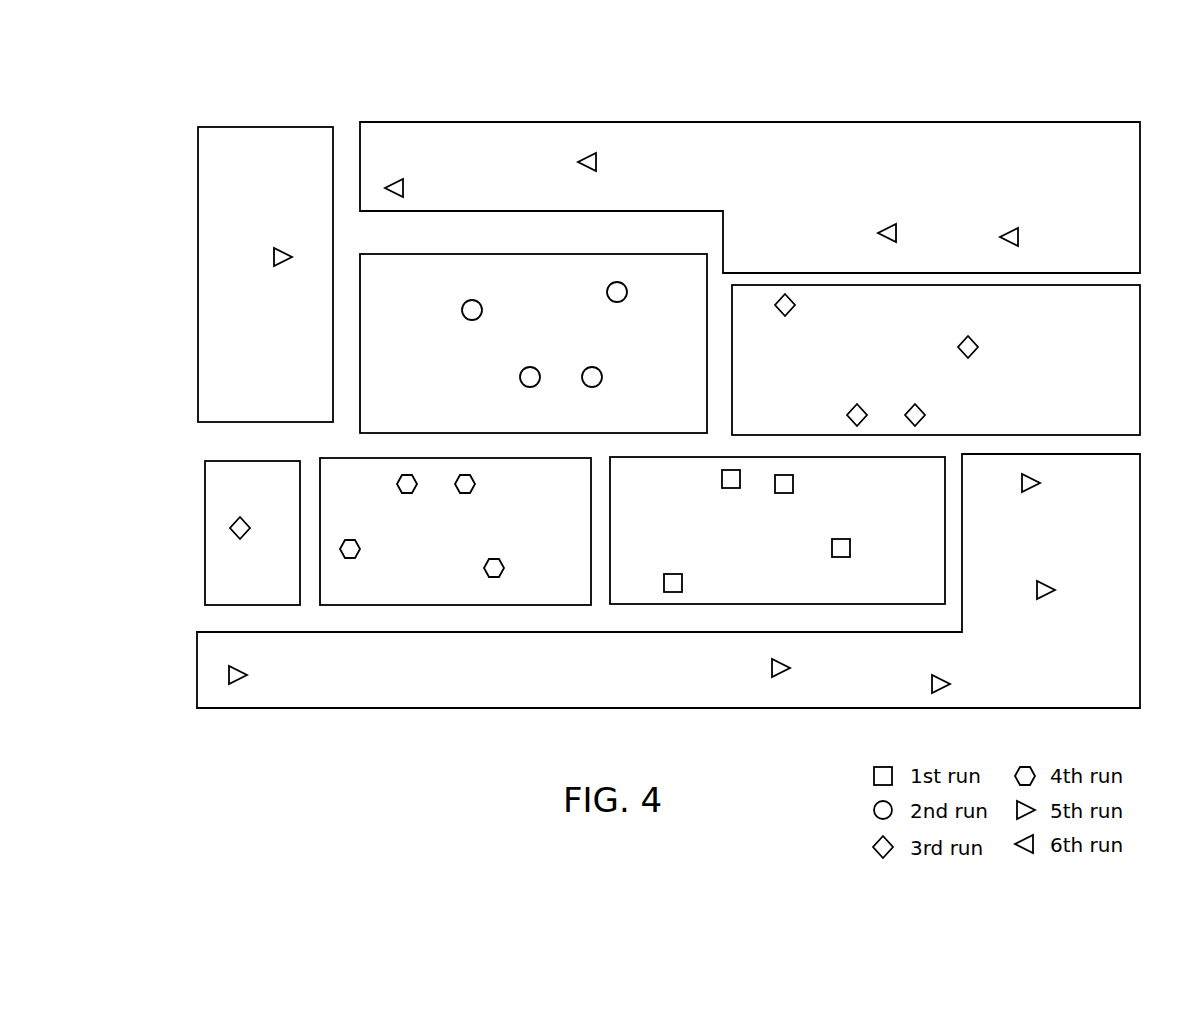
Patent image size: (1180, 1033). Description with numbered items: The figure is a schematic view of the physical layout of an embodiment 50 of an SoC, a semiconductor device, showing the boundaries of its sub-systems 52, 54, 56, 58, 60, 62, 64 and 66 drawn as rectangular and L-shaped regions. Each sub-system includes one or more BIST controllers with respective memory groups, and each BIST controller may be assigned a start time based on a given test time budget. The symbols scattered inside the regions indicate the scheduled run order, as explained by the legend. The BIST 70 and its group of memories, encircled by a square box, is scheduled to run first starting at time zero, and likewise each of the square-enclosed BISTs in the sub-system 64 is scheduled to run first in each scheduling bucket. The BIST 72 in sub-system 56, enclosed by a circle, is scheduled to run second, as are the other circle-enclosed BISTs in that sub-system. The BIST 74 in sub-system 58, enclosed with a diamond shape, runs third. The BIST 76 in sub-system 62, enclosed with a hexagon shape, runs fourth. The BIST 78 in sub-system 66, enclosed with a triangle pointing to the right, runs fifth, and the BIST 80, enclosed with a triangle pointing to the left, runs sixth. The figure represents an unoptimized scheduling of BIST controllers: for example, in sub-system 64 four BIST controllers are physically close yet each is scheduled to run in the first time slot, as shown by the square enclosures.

The embodiment of an SoC 50 is at (668, 371).
The sub-system 52 is at (288, 161).
The sub-system 54 is at (750, 197).
The sub-system 56 is at (533, 343).
The sub-system 58 is at (936, 360).
The sub-system 60 is at (259, 494).
The sub-system 62 is at (455, 531).
The sub-system 64 is at (777, 530).
The sub-system 66 is at (668, 581).
The BIST 70 is at (838, 539).
The BIST 72 is at (588, 367).
The BIST 74 is at (854, 404).
The BIST 76 is at (346, 540).
The BIST 78 is at (1037, 582).
The BIST 80 is at (884, 222).